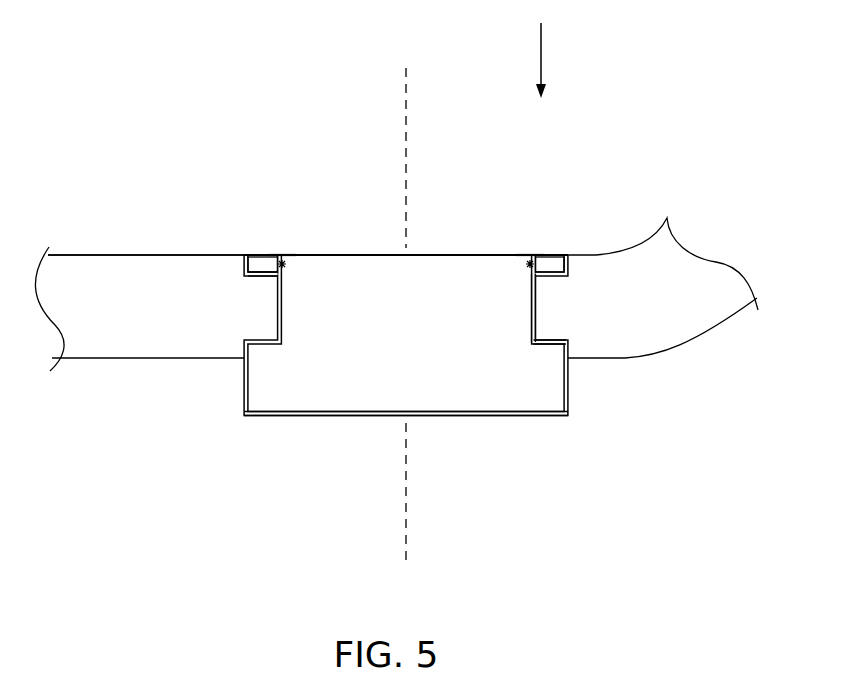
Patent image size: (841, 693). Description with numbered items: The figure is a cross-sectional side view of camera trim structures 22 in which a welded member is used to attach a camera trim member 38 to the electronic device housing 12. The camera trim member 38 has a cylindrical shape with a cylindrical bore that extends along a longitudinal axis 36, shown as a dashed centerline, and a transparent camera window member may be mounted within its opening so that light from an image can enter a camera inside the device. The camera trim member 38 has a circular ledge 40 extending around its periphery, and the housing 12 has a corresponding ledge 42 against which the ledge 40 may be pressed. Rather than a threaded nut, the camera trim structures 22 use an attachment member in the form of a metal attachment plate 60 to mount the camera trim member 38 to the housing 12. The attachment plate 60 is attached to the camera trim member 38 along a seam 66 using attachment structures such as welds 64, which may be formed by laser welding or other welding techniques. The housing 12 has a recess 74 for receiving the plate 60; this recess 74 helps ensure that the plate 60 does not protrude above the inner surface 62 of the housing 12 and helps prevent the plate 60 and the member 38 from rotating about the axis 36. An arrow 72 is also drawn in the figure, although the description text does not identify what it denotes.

The electronic device housing 12 is at (68, 359).
The camera trim structures 22 is at (225, 496).
The longitudinal axis 36 is at (407, 118).
The camera trim member 38 is at (473, 413).
The ledge 40 is at (543, 345).
The ledge 42 is at (540, 357).
The metal attachment plate 60 is at (263, 262).
The inner surface 62 is at (135, 255).
The welds 64 is at (285, 264).
The seam 66 is at (281, 240).
The applied force 72 is at (541, 52).
The recess 74 is at (251, 278).